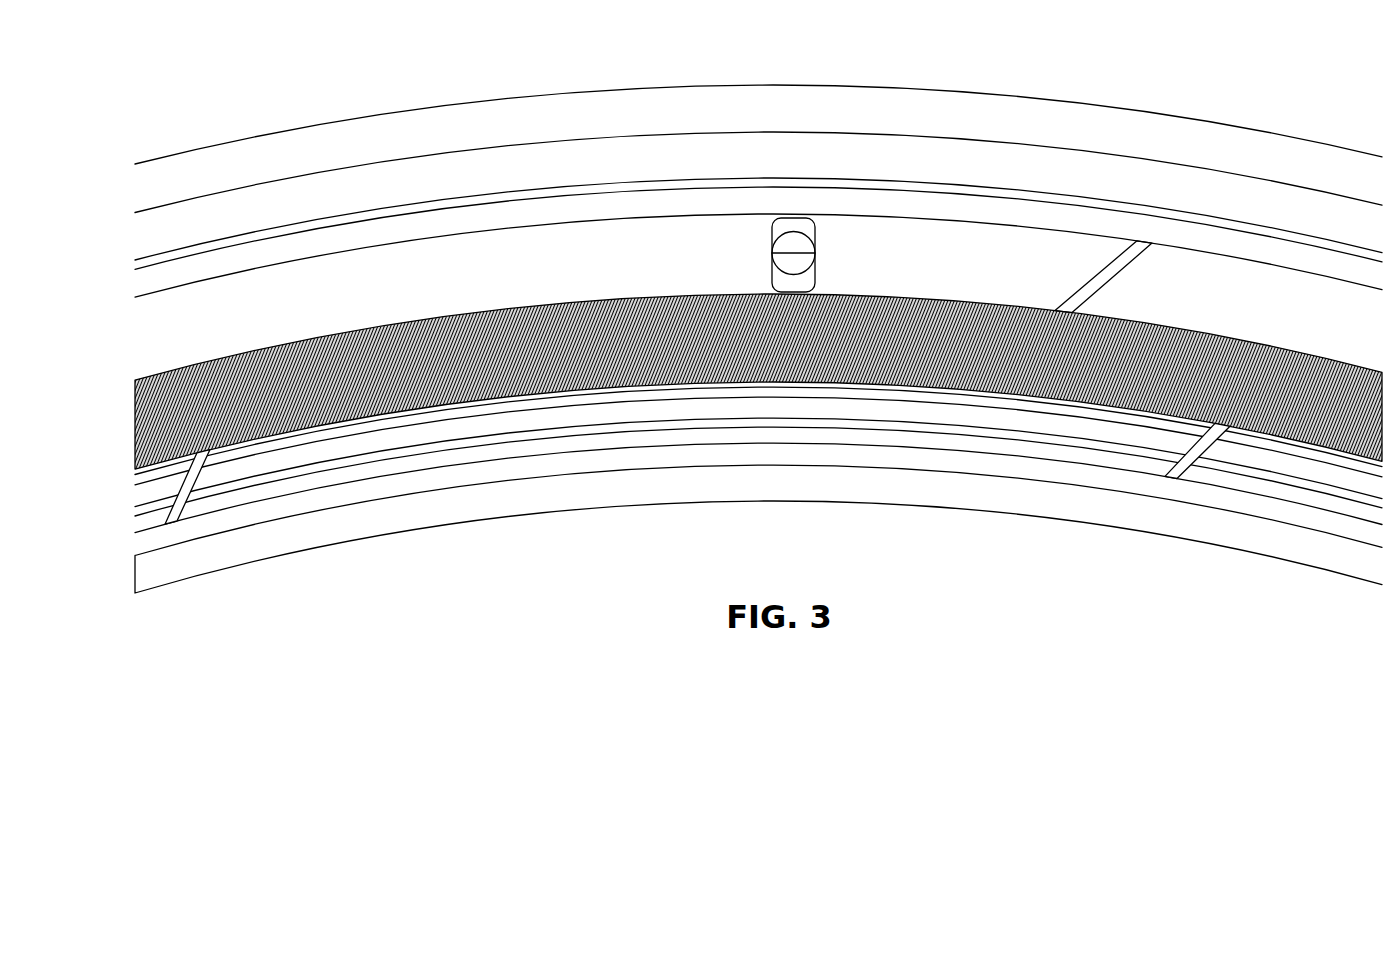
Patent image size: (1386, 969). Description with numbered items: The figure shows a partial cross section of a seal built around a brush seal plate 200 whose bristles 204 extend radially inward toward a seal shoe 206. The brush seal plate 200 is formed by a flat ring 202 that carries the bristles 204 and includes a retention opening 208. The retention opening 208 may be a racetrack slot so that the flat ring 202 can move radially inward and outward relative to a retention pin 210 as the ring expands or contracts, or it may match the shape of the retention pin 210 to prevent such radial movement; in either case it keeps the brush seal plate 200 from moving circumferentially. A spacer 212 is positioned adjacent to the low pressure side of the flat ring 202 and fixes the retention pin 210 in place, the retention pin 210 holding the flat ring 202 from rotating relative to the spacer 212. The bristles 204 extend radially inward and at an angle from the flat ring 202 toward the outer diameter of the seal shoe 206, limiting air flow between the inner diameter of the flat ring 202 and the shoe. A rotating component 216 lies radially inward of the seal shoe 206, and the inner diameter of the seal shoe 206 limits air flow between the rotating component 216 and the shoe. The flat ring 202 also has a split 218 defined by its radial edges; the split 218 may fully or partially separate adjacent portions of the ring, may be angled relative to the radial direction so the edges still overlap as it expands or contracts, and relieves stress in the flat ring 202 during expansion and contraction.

The brush seal plate 200 is at (458, 253).
The flat ring 202 is at (525, 250).
The bristles 204 is at (877, 365).
The seal shoe 206 is at (1005, 435).
The retention opening 208 is at (782, 226).
The retention pin 210 is at (800, 243).
The spacer 212 is at (973, 163).
The rotating component 216 is at (1078, 508).
The split 218 is at (1118, 258).